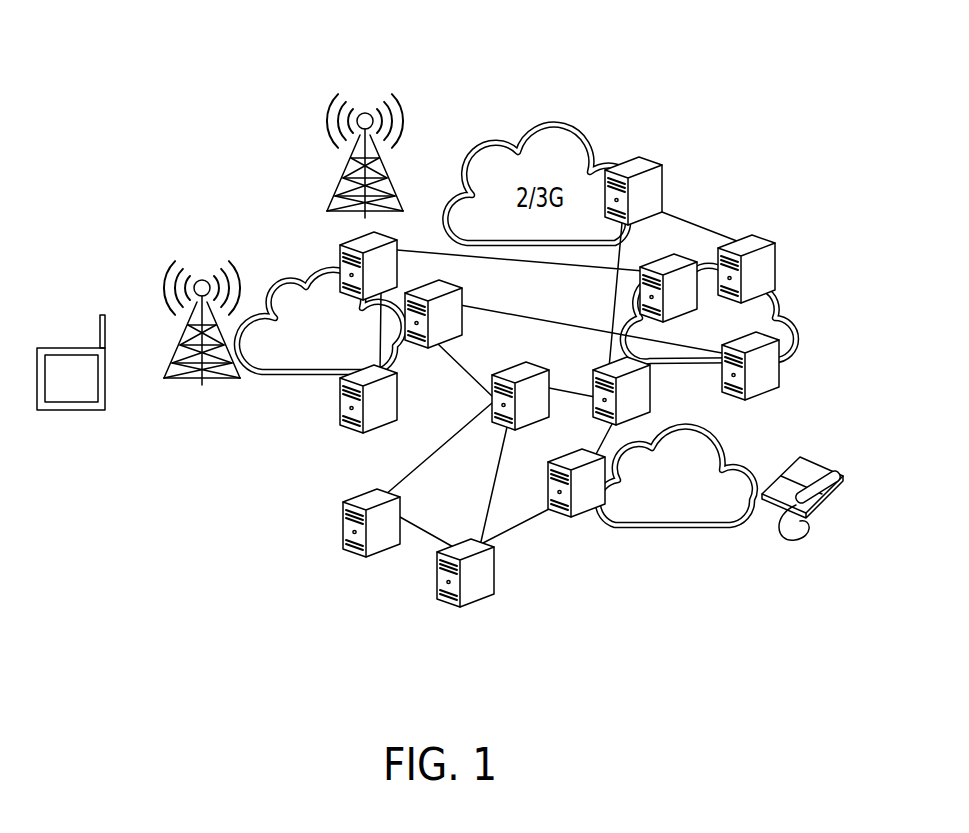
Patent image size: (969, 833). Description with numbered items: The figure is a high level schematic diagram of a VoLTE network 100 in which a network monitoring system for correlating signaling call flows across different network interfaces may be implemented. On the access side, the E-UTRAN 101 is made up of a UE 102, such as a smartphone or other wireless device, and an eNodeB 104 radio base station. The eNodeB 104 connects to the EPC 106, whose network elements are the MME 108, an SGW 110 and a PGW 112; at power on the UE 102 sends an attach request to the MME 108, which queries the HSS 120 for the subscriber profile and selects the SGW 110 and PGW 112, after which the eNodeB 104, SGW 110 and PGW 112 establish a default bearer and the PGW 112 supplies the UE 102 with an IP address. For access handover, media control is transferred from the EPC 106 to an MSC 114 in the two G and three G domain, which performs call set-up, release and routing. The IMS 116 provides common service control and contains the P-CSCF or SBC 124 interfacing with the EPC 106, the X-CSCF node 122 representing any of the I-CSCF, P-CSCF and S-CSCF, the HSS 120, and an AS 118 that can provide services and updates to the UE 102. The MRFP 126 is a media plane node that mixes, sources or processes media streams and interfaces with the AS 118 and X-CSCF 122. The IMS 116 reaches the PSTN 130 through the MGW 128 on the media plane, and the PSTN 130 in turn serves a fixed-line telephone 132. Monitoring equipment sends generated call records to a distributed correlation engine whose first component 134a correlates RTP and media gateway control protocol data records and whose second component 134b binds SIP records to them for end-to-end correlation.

The VoLTE network 100 is at (781, 114).
The Evolved Universal Terrestrial Radio Access Network (E-UTRAN) 101 is at (131, 256).
The UE 102 is at (70, 410).
The eNodeB 104 is at (205, 414).
The EPC 106 is at (285, 300).
The Mobility Management Entity (MME) 108 is at (387, 236).
The Serving Gateway (SGW) 110 is at (339, 425).
The Packet data network Gateway (PGW) 112 is at (462, 296).
The Mobile Switching Centre (MSC) 114 is at (645, 160).
The IMS 116 is at (780, 332).
The Application Server (AS) 118 is at (756, 239).
The Home Subscriber Server (HSS) 120 is at (672, 268).
The X-CSCF node 122 is at (760, 387).
The P-CSCF or Session Border Controller (SBC) 124 is at (640, 389).
The Media Resource Function Processor (MRFP) 126 is at (517, 377).
The Media Gateway (MGW) 128 is at (550, 472).
The PSTN 130 is at (663, 513).
The telephone 132 is at (825, 498).
The first component of distributed correlation engine 134a is at (382, 544).
The second component of distributed correlation engine 134b is at (478, 597).